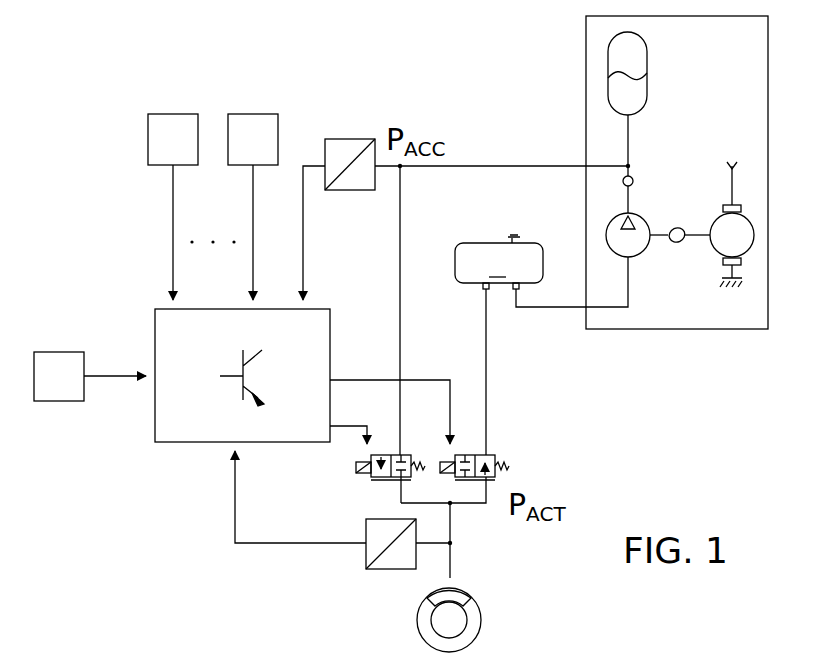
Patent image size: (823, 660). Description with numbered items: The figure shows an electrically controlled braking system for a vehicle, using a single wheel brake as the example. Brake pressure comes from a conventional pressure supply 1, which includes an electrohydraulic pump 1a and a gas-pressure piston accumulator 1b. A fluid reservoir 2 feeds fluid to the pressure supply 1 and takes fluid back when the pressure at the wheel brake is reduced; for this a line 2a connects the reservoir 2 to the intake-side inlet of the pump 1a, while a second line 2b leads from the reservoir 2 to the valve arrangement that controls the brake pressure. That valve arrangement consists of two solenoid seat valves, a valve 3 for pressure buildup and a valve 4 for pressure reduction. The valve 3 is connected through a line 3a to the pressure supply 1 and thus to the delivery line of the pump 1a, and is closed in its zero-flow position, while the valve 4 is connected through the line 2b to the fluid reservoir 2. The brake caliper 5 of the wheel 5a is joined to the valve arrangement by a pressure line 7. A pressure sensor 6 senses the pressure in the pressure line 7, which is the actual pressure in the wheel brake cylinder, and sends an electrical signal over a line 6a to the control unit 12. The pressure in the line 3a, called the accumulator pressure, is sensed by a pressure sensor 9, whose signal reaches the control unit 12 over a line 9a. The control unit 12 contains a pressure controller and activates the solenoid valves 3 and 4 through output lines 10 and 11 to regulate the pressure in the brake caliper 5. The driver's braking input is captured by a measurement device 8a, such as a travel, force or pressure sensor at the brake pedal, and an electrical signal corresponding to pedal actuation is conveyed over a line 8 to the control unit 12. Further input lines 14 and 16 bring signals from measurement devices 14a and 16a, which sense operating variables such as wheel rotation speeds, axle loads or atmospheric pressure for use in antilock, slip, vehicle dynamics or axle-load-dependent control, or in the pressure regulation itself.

The pressure supply 1 is at (677, 197).
The electrohydraulic pump 1a is at (666, 217).
The gas-pressure piston accumulator 1b is at (636, 60).
The fluid reservoir 2 is at (499, 262).
The line 2a is at (552, 309).
The second line 2b is at (487, 355).
The valve for pressure buildup 3 is at (405, 453).
The line 3a is at (488, 165).
The valve for pressure reduction 4 is at (490, 453).
The brake caliper 5 is at (465, 584).
The wheel 5a is at (490, 625).
The pressure sensor 6 is at (390, 570).
The line 6a is at (305, 545).
The pressure line 7 is at (452, 527).
The line 8 is at (107, 375).
The measurement device 8a is at (55, 362).
The pressure sensor 9 is at (355, 138).
The line 9a is at (305, 252).
The output line 10 is at (362, 432).
The output line 11 is at (423, 378).
The control unit 12 is at (188, 433).
The input line 14 is at (173, 260).
The measurement device 14a is at (170, 125).
The input line 16 is at (253, 263).
The measurement device 16a is at (250, 125).